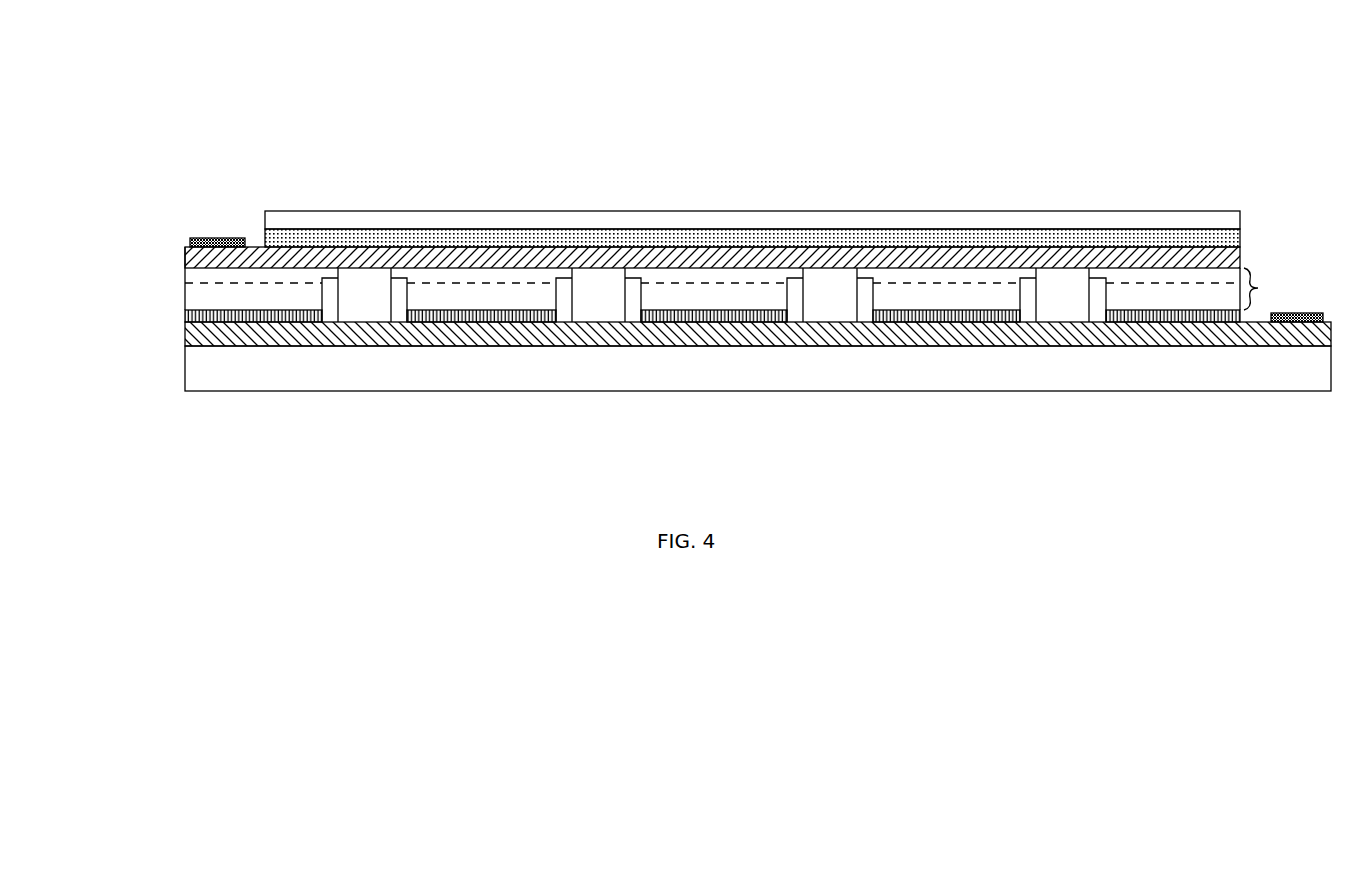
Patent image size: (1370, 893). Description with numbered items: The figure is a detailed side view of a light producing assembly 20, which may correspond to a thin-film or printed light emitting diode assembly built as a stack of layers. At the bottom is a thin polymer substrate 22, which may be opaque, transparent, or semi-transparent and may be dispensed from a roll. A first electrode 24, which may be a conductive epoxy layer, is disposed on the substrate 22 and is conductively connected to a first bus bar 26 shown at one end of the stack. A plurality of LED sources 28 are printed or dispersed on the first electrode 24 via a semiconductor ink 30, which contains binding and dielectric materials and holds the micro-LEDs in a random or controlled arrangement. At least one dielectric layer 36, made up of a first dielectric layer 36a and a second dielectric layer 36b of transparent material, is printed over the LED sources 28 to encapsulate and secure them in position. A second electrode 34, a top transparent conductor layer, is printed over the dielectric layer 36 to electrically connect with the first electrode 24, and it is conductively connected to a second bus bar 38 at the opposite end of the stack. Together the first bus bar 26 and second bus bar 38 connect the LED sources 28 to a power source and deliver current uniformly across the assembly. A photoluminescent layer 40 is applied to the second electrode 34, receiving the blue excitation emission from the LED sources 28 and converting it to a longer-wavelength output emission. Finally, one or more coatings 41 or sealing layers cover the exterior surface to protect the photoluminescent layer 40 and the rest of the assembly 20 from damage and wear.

The light producing assembly 20 is at (858, 52).
The substrate 22 is at (185, 372).
The first electrode 24 is at (185, 336).
The first bus bar 26 is at (1298, 312).
The LED sources 28 is at (361, 272).
The semiconductor ink 30 is at (185, 317).
The second electrode 34 is at (185, 248).
The dielectric layer 36 is at (1258, 288).
The first dielectric layer 36a is at (185, 297).
The second dielectric layer 36b is at (185, 265).
The second bus bar 38 is at (228, 237).
The photoluminescent layer 40 is at (1241, 236).
The coatings 41 is at (326, 212).